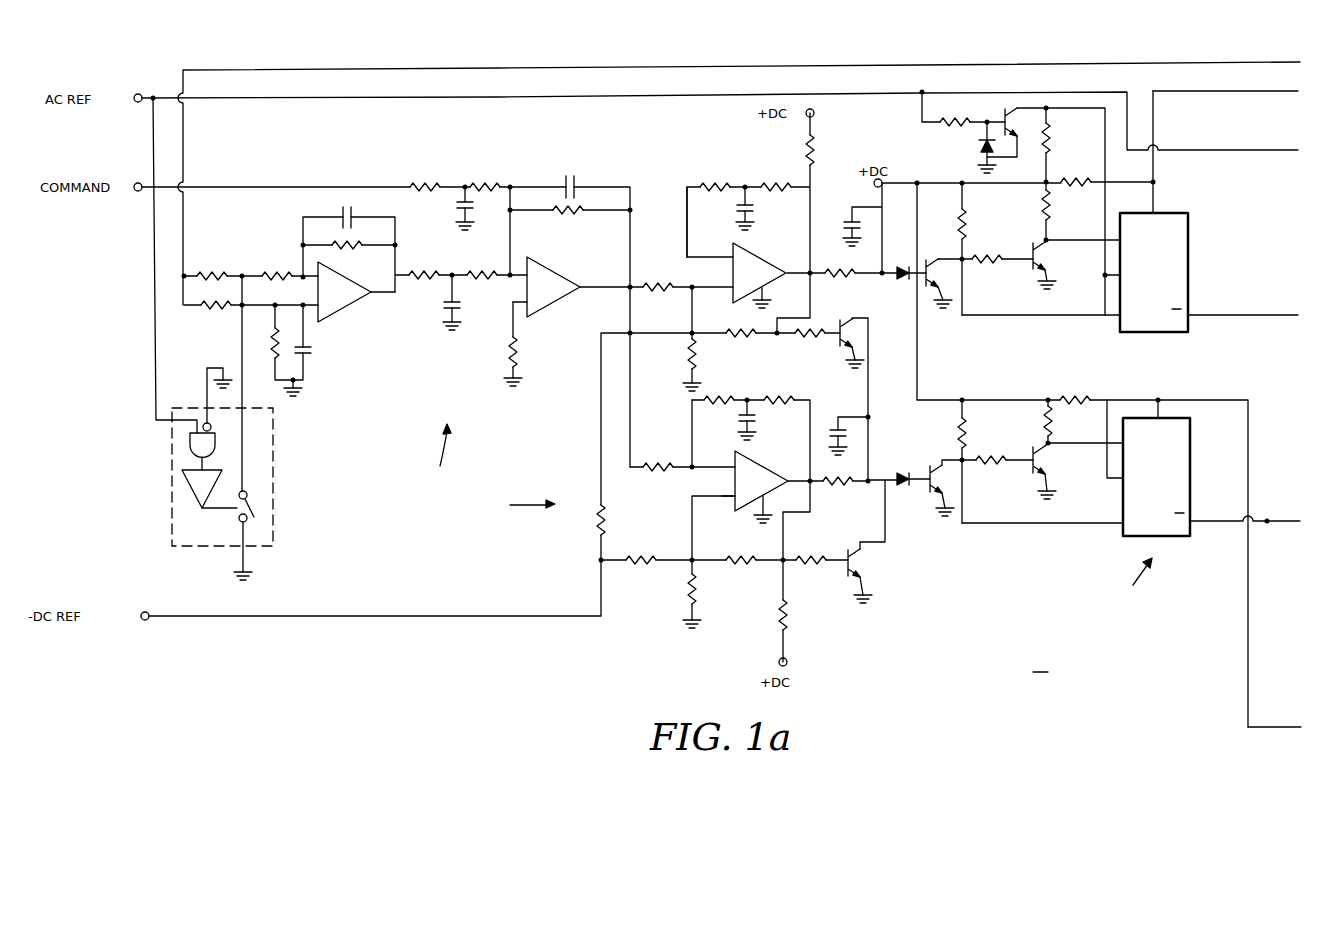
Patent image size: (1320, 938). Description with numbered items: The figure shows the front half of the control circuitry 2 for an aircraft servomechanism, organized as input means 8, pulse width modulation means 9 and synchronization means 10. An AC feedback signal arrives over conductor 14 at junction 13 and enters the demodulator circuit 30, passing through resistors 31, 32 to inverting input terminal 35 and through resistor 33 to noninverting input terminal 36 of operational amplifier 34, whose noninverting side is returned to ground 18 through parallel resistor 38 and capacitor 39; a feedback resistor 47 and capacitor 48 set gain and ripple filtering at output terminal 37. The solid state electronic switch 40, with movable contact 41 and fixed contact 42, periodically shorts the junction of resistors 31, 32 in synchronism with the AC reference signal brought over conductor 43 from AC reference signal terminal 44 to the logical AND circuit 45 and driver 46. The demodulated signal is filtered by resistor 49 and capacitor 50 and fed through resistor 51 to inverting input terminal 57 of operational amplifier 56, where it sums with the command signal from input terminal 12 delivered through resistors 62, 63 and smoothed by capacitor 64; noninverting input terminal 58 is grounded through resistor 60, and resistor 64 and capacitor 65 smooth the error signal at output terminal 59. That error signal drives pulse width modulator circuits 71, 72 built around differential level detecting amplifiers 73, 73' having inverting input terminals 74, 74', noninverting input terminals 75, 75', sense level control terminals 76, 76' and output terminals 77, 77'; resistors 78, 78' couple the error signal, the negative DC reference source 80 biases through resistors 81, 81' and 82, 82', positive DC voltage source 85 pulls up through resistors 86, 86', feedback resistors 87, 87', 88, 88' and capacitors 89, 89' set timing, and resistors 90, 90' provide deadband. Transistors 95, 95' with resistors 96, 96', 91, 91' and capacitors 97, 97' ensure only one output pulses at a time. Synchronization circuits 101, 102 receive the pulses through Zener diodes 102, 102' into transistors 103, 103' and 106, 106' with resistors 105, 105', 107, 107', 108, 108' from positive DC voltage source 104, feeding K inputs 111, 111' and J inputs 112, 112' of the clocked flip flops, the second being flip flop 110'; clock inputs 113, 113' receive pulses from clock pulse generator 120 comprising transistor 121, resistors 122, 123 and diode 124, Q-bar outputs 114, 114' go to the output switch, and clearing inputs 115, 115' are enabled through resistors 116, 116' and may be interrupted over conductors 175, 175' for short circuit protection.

The control circuitry 2 is at (1040, 662).
The input means 8 is at (438, 453).
The pulse width modulation means 9 is at (522, 507).
The synchronization means 10 is at (1132, 584).
The input terminal 12 is at (140, 191).
The junction 13 is at (183, 275).
The conductor 14 is at (184, 153).
The ground 18 is at (223, 370).
The demodulator circuit 30 is at (357, 329).
The resistor 31 is at (212, 272).
The resistor 32 is at (277, 272).
The resistor 33 is at (213, 310).
The operational amplifier 34 is at (347, 318).
The inverting input terminal 35 is at (302, 282).
The noninverting input terminal 36 is at (319, 314).
The output terminal 37 is at (376, 296).
The resistor 38 is at (273, 345).
The capacitor 39 is at (312, 350).
The solid state electronic switch 40 is at (275, 442).
The movable contact 41 is at (250, 498).
The fixed contact 42 is at (248, 522).
The conductor 43 is at (1240, 150).
The AC reference signal terminal 44 is at (138, 94).
The logical AND circuit 45 is at (190, 445).
The driver 46 is at (190, 493).
The resistor 47 is at (347, 250).
The capacitor 48 is at (343, 213).
The resistor 49 is at (432, 266).
The capacitor 50 is at (446, 304).
The resistor 51 is at (483, 273).
The operational amplifier 56 is at (545, 268).
The inverting input terminal 57 is at (513, 302).
The noninverting input terminal 58 is at (513, 318).
The output terminal 59 is at (584, 290).
The resistor 60 is at (507, 355).
The resistor 62 is at (425, 183).
The resistor 63 is at (485, 183).
The capacitor / resistor 64 is at (458, 205).
The capacitor 65 is at (572, 178).
The pulse width modulator circuit 71 is at (795, 244).
The pulse width modulator circuit 72 is at (800, 467).
The differential level detecting amplifier 73 is at (709, 222).
The differential level detecting amplifier 73' is at (712, 433).
The inverting input terminal 74 is at (702, 267).
The inverting input terminal 74' is at (706, 478).
The noninverting input terminal 75 is at (712, 298).
The noninverting input terminal 75' is at (718, 519).
The sense level control terminal 76 is at (774, 294).
The sense level control terminal 76' is at (780, 505).
The output terminal 77 is at (793, 259).
The output terminal 77' is at (818, 500).
The resistor 78 is at (656, 258).
The resistor 78' is at (656, 449).
The precision negative DC reference source 80 is at (147, 620).
The resistor 81 is at (582, 521).
The resistor 81' is at (642, 544).
The resistor 82 is at (673, 354).
The resistor 82' is at (715, 592).
The positive DC voltage source 85 is at (815, 113).
The resistor 86 is at (830, 149).
The resistor 86' is at (814, 621).
The resistor 87 is at (770, 167).
The resistor 87' is at (777, 386).
The resistor 88 is at (705, 167).
The resistor 88' is at (717, 386).
The capacitor 89 is at (771, 214).
The capacitor 89' is at (771, 430).
The resistor 90 is at (742, 348).
The resistor 90' is at (745, 588).
The resistor 91 is at (837, 284).
The resistor 91' is at (853, 501).
The NPN transistor 95 is at (857, 315).
The transistor 95' is at (830, 551).
The resistor 96 is at (810, 348).
The resistor 96' is at (811, 579).
The capacitor 97 is at (843, 201).
The capacitor 97' is at (839, 412).
The synchronization circuit 101 is at (1238, 204).
The Zener diode / synchronization circuit 102 is at (1070, 397).
The Zener diode 102' is at (911, 504).
The NPN transistor 103 is at (930, 256).
The NPN transistor 103' is at (917, 460).
The positive DC voltage source 104 is at (880, 187).
The resistor 105 is at (940, 216).
The resistor 105' is at (938, 427).
The NPN transistor 106 is at (1024, 231).
The NPN transistor 106' is at (1019, 446).
The resistor 107 is at (986, 276).
The resistor 107' is at (996, 478).
The resistor 108 is at (1073, 207).
The resistor 108' is at (1077, 421).
The clocked flip flop 110' is at (1187, 477).
The K input 111 is at (1066, 338).
The K input 111' is at (1042, 545).
The J input 112 is at (1095, 215).
The J input 112' is at (1085, 459).
The clock input 113 is at (1091, 265).
The clock input 113' is at (1098, 455).
The Q-bar output 114 is at (1243, 334).
The Q-bar output 114' is at (1255, 541).
The clearing input 115 is at (1187, 152).
The clearing input 115' is at (1204, 415).
The resistor 116 is at (1080, 168).
The resistor 116' is at (1063, 387).
The clock pulse generator 120 is at (976, 143).
The NPN transistor 121 is at (1008, 108).
The resistor 122 is at (955, 116).
The resistor 123 is at (1050, 140).
The diode 124 is at (984, 157).
The conductor 175 is at (1225, 79).
The conductor 175' is at (1284, 704).